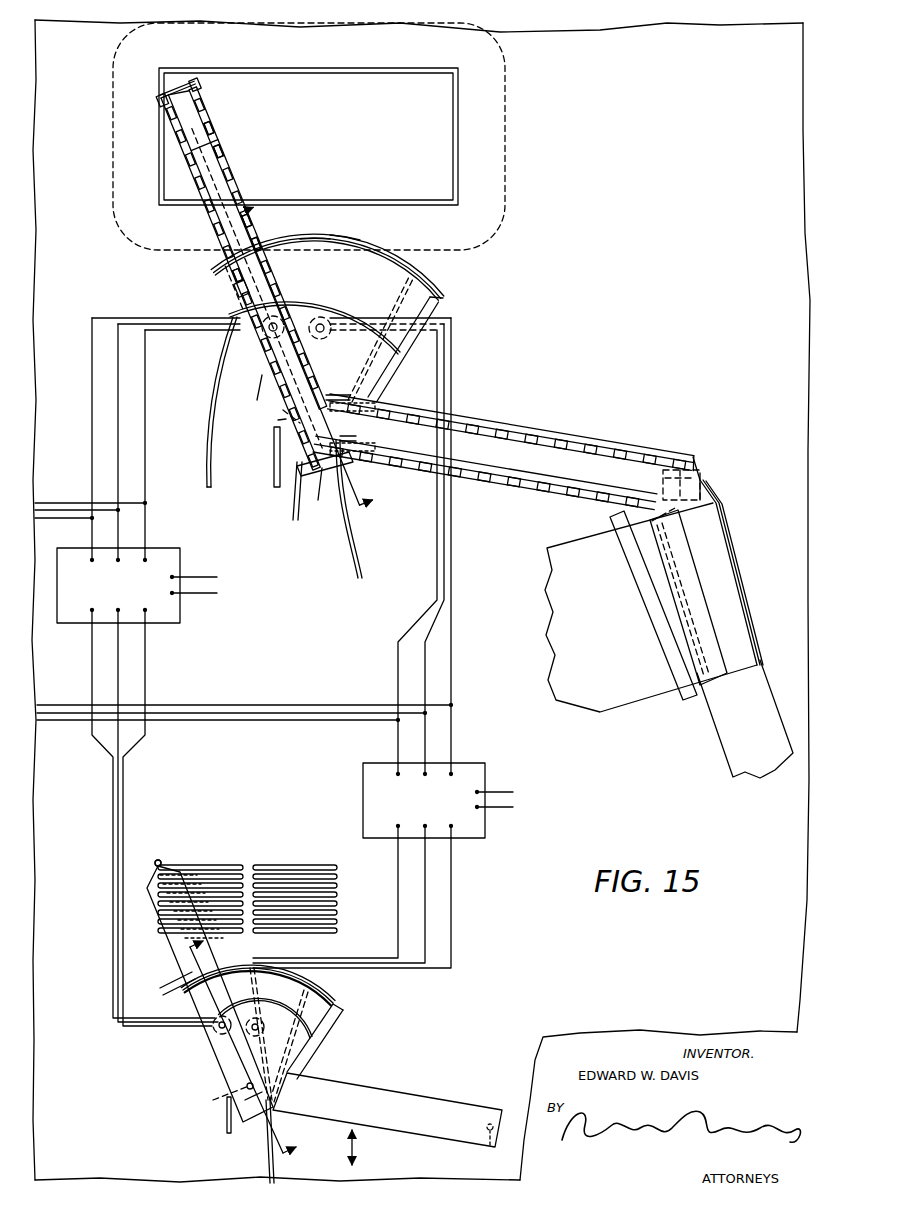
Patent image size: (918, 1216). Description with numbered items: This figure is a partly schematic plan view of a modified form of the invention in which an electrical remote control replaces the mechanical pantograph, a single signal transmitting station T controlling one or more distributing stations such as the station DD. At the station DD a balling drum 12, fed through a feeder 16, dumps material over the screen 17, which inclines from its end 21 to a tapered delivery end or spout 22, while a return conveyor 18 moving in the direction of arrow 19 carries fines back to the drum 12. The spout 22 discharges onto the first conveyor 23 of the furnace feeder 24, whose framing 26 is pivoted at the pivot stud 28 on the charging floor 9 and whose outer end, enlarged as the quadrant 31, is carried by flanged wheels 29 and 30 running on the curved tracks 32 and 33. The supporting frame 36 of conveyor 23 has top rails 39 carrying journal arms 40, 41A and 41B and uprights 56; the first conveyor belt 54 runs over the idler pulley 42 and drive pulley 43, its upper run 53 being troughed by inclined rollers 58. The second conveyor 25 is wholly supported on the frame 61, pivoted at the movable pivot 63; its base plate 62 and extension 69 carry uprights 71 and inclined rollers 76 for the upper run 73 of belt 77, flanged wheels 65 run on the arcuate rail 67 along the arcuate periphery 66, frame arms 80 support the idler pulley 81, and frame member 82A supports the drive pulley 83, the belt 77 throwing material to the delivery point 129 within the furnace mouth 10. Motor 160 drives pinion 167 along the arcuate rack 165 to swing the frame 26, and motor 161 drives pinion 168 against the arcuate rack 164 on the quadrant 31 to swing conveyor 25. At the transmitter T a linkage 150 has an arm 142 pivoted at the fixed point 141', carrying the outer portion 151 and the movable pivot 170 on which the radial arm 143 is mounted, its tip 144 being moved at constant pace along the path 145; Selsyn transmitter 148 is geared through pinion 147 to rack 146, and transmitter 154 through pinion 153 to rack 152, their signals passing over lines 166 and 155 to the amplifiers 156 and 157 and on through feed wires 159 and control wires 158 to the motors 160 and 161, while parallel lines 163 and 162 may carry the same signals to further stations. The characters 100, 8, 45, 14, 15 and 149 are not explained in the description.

The charging floor 9 is at (530, 52).
The enclosure housing 100 is at (504, 75).
The charging mouth 10 is at (412, 70).
The extension 69 is at (243, 192).
The feeder 16 is at (279, 375).
The delivery end idler pulley 81 is at (190, 84).
The frame arms 80 is at (158, 104).
The delivery point 129 is at (172, 83).
The uprights 71 is at (222, 127).
The second conveyor 25 is at (236, 150).
The inclined rollers 76 is at (232, 160).
The conveyor belt 77 is at (207, 175).
The upper run 73 is at (247, 224).
The flanged supporting wheels 65 is at (262, 252).
The base plate 62 is at (225, 292).
The flanged wheel 30 is at (235, 306).
The motion transmitting motor 161 is at (249, 387).
The movable pivot 63 is at (280, 416).
The arcuate rack 165 is at (277, 488).
The supporting frame 61 is at (310, 480).
The drive pulley 83 is at (319, 500).
The frame member 82A is at (296, 520).
The curved track 33 is at (205, 478).
The curved track 32 is at (358, 578).
The quadrant 31 is at (352, 262).
The arcuate periphery 66 is at (312, 245).
The arcuate rail 67 is at (335, 247).
The pinion 167 is at (340, 308).
The pinion 168 is at (312, 276).
The arcuate rack 164 is at (388, 364).
The flanged wheels 29 is at (345, 428).
The motion transmitting motor 160 is at (326, 340).
The furnace feeder 24 is at (436, 307).
The framing 26 is at (448, 318).
The drive pulley 43 is at (330, 394).
The journal arm 41B is at (372, 410).
The journal arm 41A is at (348, 472).
The hinge pin 45 is at (356, 462).
The pivot 8 is at (400, 443).
The distributing station DD is at (484, 372).
The first conveyor 23 is at (593, 440).
The supporting uprights 56 is at (475, 416).
The first conveyor belt 54 is at (491, 445).
The top rails 39 is at (522, 432).
The supporting frame 36 is at (556, 432).
The upper run 53 is at (640, 464).
The inclined rollers 58 is at (495, 488).
The journal arms 40 is at (694, 460).
The idler pulley 42 is at (706, 470).
The pivot stud 28 is at (701, 480).
The delivery end 22 is at (690, 492).
The balling drum 12 is at (616, 645).
The cross beam 14 is at (653, 645).
The frame member 15 is at (697, 585).
The screen 17 is at (737, 605).
The screen end 21 is at (758, 660).
The return conveyor 18 is at (724, 757).
The arrow 19 is at (743, 708).
The control wires 158 is at (145, 423).
The parallel lines 162 is at (62, 519).
The amplifier 156 is at (130, 595).
The signal lines 155 is at (113, 800).
The parallel lines 163 is at (248, 720).
The feed wires 159 is at (400, 662).
The amplifier 157 is at (437, 812).
The signal lines 166 is at (398, 905).
The path 145 is at (287, 865).
The tip 144 is at (162, 866).
The pinion 147 is at (275, 976).
The Selsyn transmitter 148 is at (268, 1020).
The rack 152 is at (312, 1033).
The pinion 153 is at (213, 1028).
The Selsyn transmitter 154 is at (228, 1036).
The outer portion 151 is at (190, 1000).
The movable pivot point 170 is at (230, 1098).
The radial arm 143 is at (227, 1060).
The rack 146 is at (225, 1128).
The arm 142 is at (416, 1130).
The transmitting station T is at (350, 1078).
The linkage 150 is at (478, 1108).
The fixed pivot point 141' is at (489, 1147).
The direction of movement 149 is at (353, 1150).